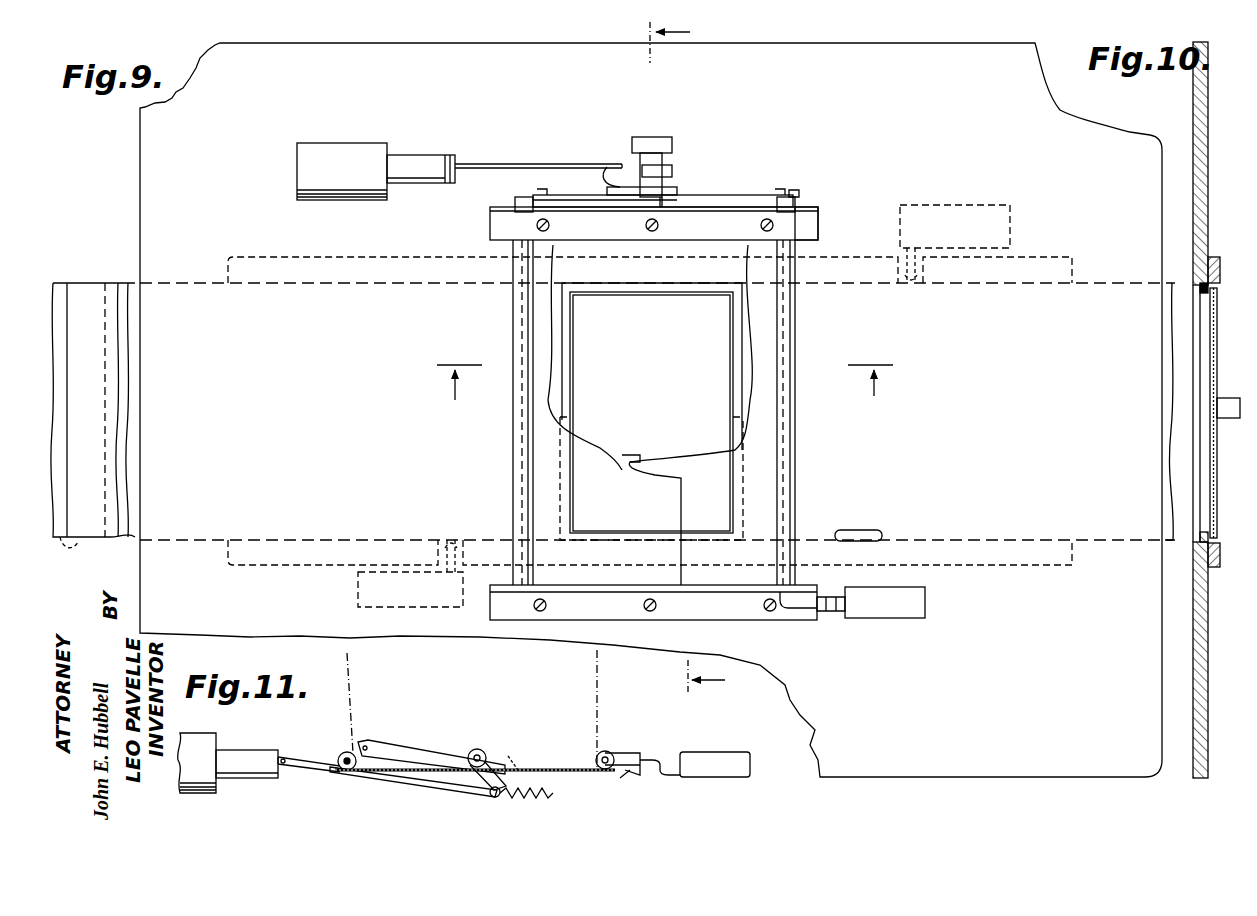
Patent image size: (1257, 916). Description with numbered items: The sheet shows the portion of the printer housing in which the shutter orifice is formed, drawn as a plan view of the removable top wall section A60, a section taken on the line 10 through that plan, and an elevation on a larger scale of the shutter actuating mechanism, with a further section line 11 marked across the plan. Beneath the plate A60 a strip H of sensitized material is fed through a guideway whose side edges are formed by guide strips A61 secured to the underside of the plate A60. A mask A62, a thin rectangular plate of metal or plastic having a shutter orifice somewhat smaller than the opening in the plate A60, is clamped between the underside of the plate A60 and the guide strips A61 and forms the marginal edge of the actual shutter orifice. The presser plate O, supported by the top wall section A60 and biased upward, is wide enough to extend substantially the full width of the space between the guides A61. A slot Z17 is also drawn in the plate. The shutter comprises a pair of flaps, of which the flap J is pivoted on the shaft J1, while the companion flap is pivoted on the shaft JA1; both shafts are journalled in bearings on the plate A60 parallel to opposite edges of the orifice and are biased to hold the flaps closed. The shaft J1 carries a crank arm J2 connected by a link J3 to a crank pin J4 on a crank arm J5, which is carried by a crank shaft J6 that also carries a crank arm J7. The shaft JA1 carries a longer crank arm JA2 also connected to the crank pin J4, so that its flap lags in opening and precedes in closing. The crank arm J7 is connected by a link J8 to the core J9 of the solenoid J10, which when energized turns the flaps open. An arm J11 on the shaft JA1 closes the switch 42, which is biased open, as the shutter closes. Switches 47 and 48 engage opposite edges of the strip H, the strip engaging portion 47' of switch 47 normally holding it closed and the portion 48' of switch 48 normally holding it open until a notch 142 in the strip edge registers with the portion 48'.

In FIG. 9, the shutter flap J is at (638, 455).
In FIG. 11, the shutter flap J is at (390, 768).
In FIG. 9, the pintle or shaft J1 is at (520, 230).
In FIG. 11, the pintle or shaft J1 is at (350, 780).
In FIG. 9, the crank arm J2 is at (515, 198).
In FIG. 11, the crank arm J2 is at (347, 751).
In FIG. 9, the link J3 is at (565, 195).
In FIG. 11, the link J3 is at (398, 752).
In FIG. 9, the crank pin J4 is at (666, 202).
In FIG. 11, the crank pin J4 is at (518, 748).
In FIG. 9, the crank arm J5 is at (625, 182).
In FIG. 11, the crank arm J5 is at (487, 755).
In FIG. 9, the crank shaft J6 is at (654, 140).
In FIG. 11, the crank shaft J6 is at (476, 748).
In FIG. 9, the crank arm J7 is at (672, 172).
In FIG. 11, the crank arm J7 is at (493, 796).
In FIG. 9, the link J8 is at (548, 164).
In FIG. 11, the link J8 is at (283, 755).
In FIG. 9, the armature or core J9 is at (415, 155).
In FIG. 11, the armature or core J9 is at (232, 750).
In FIG. 9, the electromagnet or solenoid J10 is at (335, 143).
In FIG. 11, the electromagnet or solenoid J10 is at (200, 722).
In FIG. 9, the arm J11 is at (805, 612).
In FIG. 11, the arm J11 is at (630, 775).
In FIG. 9, the pintle or shaft JA1 is at (790, 220).
In FIG. 11, the pintle or shaft JA1 is at (608, 752).
In FIG. 9, the crank arm JA2 is at (800, 194).
In FIG. 11, the crank arm JA2 is at (622, 762).
In FIG. 9, the removable top wall section A60 is at (600, 82).
In FIG. 10, the removable top wall section A60 is at (1219, 410).
In FIG. 9, the guide strips A61 is at (430, 270).
In FIG. 10, the guide strips A61 is at (1218, 258).
In FIG. 9, the mask A62 is at (575, 378).
In FIG. 10, the mask A62 is at (1208, 572).
In FIG. 10, the presser plate O is at (1215, 322).
In FIG. 9, the strip of sensitized material H is at (98, 283).
In FIG. 9, the notch 142 is at (85, 552).
In FIG. 9, the switch 47 is at (955, 203).
In FIG. 9, the strip engaging portion 47' is at (933, 282).
In FIG. 9, the switch 48 is at (410, 604).
In FIG. 9, the strip edge engaging portion 48' is at (447, 539).
In FIG. 9, the slot Z17 is at (868, 528).
In FIG. 9, the switch 42 is at (894, 612).
In FIG. 11, the switch 42 is at (722, 752).
In FIG. 9, the section line 10 is at (687, 356).
In FIG. 9, the section line 11 is at (665, 369).